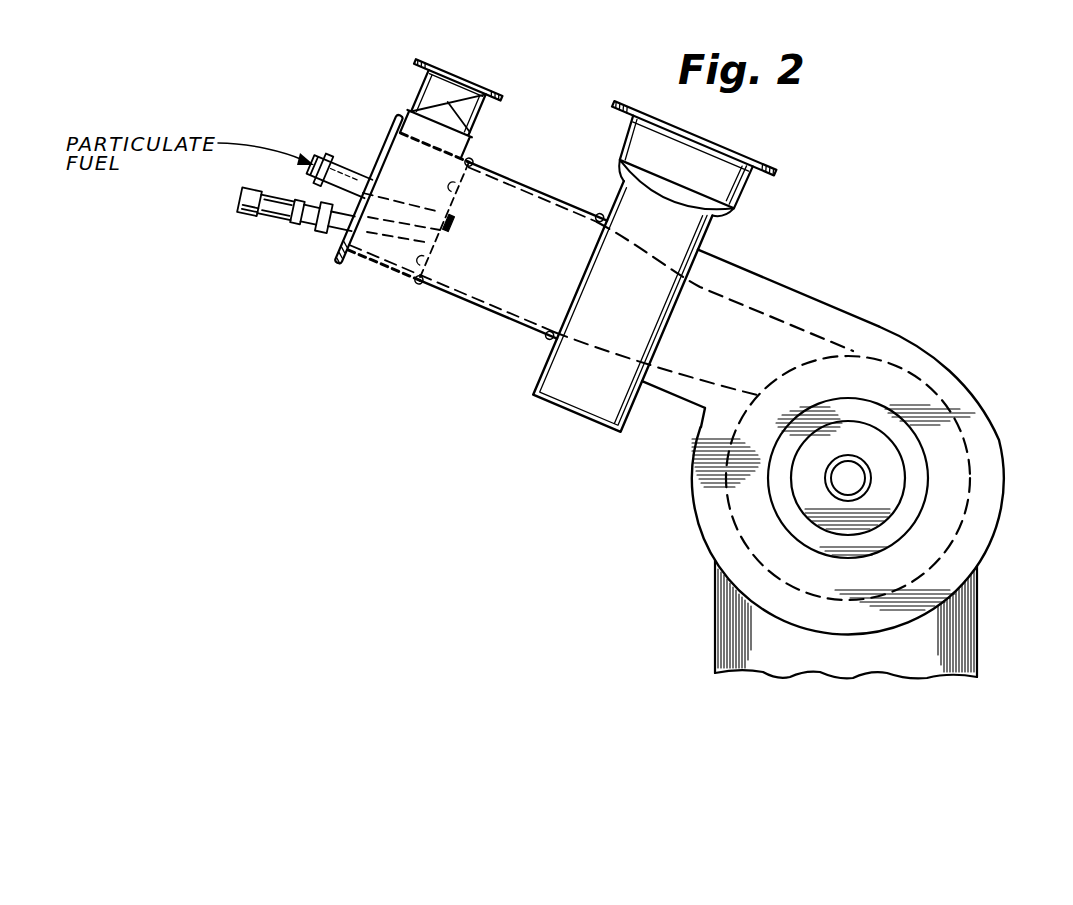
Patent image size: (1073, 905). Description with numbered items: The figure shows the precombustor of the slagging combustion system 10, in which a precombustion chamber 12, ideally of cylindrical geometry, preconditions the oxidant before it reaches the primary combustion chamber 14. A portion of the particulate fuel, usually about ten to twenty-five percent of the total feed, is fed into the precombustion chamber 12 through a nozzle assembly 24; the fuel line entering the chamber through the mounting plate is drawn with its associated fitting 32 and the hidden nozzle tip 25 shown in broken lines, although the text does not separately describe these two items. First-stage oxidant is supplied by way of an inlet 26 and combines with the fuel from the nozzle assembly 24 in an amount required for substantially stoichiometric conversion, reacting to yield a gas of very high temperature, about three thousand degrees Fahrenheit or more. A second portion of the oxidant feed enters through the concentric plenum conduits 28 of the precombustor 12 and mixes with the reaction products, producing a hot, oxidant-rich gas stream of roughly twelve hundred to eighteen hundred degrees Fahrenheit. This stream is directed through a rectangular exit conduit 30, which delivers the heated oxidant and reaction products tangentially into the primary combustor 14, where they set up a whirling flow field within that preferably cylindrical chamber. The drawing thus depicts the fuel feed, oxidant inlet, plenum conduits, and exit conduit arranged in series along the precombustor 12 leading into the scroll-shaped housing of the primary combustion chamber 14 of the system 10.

The slagging combustion system 10 is at (973, 372).
The precombustion chamber 12 is at (492, 318).
The primary combustion chamber 14 is at (990, 550).
The nozzle assembly 24 is at (357, 168).
The fuel nozzle 25 is at (435, 283).
The inlet 26 is at (483, 107).
The concentric plenum conduits 28 is at (748, 183).
The exit conduit 30 is at (840, 307).
The fuel fitting 32 is at (262, 212).